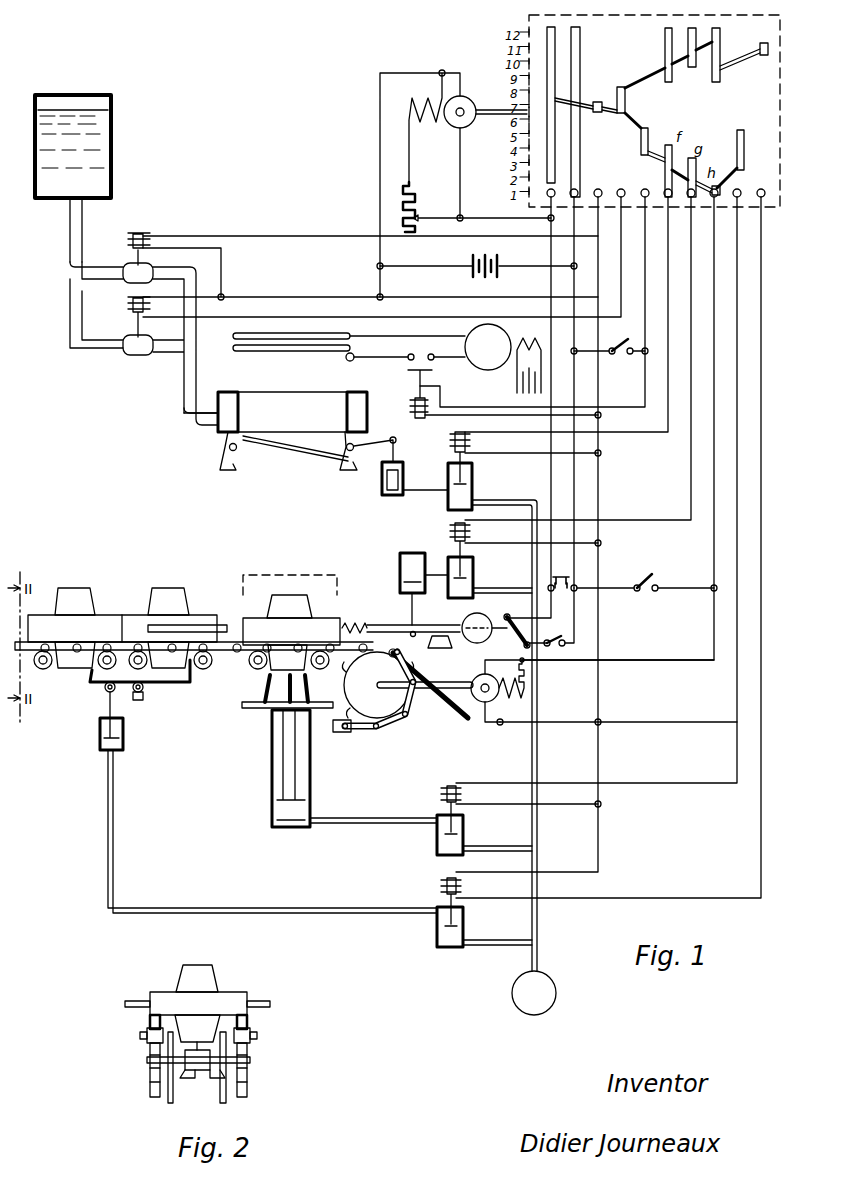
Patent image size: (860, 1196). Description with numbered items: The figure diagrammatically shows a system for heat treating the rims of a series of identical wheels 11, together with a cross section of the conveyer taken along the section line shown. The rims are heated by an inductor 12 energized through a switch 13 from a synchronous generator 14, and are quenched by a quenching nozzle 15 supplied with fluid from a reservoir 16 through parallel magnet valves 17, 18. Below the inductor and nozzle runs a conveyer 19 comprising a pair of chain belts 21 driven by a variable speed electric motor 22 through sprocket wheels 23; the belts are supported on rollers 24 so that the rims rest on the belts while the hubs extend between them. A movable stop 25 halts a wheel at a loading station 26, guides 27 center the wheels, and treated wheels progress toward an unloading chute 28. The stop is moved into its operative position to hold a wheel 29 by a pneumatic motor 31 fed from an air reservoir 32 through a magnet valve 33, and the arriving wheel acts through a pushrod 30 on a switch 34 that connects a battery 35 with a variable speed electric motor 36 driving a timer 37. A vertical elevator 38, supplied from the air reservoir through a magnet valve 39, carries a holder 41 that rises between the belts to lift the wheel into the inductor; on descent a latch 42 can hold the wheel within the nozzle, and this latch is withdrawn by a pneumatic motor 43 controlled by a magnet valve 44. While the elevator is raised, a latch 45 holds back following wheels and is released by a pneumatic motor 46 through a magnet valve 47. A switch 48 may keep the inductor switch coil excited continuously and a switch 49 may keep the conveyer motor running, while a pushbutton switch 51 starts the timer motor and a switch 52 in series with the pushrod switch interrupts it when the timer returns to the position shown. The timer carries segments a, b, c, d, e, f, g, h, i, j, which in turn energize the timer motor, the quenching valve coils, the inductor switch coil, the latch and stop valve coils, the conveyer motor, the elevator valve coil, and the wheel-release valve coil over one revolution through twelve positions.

In FIG. 1, the wheels 11 is at (84, 606).
In FIG. 2, the wheels 11 is at (200, 970).
In FIG. 1, the inductor 12 is at (233, 336).
In FIG. 1, the switch 13 is at (412, 372).
In FIG. 1, the synchronous generator 14 is at (488, 370).
In FIG. 1, the quenching nozzle 15 is at (236, 386).
In FIG. 1, the reservoir 16 is at (108, 178).
In FIG. 1, the magnet valve 17 is at (150, 272).
In FIG. 1, the magnet valve 18 is at (150, 340).
In FIG. 1, the conveyer 19 is at (415, 712).
In FIG. 1, the chain belts 21 is at (238, 652).
In FIG. 2, the chain belts 21 is at (150, 1022).
In FIG. 1, the variable speed electric motor 22 is at (478, 678).
In FIG. 1, the sprocket wheels 23 is at (395, 722).
In FIG. 2, the sprocket wheels 23 is at (150, 1072).
In FIG. 1, the rollers 24 is at (204, 670).
In FIG. 2, the rollers 24 is at (141, 1040).
In FIG. 1, the movable stop 25 is at (370, 625).
In FIG. 1, the loading station 26 is at (270, 575).
In FIG. 1, the guides 27 is at (200, 625).
In FIG. 2, the guides 27 is at (133, 1001).
In FIG. 1, the unloading chute 28 is at (422, 668).
In FIG. 2, the unloading chute 28 is at (170, 1032).
In FIG. 1, the wheel 29 is at (270, 604).
In FIG. 1, the pushrod 30 is at (465, 622).
In FIG. 1, the pneumatic motor 31 is at (400, 556).
In FIG. 1, the reservoir 32 is at (520, 978).
In FIG. 1, the magnet valve 33 is at (473, 574).
In FIG. 1, the switch 34 is at (525, 637).
In FIG. 1, the battery 35 is at (499, 264).
In FIG. 1, the variable speed electric motor 36 is at (455, 126).
In FIG. 1, the timer 37 is at (766, 207).
In FIG. 1, the vertical elevator 38 is at (310, 784).
In FIG. 1, the magnet valve 39 is at (437, 832).
In FIG. 1, the holder 41 is at (265, 692).
In FIG. 1, the latch 42 is at (350, 470).
In FIG. 1, the pneumatic motor 43 is at (413, 487).
In FIG. 1, the magnet valve 44 is at (472, 483).
In FIG. 1, the latch 45 is at (170, 682).
In FIG. 2, the latch 45 is at (197, 1076).
In FIG. 1, the pneumatic motor 46 is at (100, 735).
In FIG. 1, the magnet valve 47 is at (437, 924).
In FIG. 1, the switch 48 is at (609, 339).
In FIG. 1, the switch 49 is at (640, 576).
In FIG. 1, the pushbutton switch 51 is at (561, 577).
In FIG. 1, the switch 52 is at (559, 617).
In FIG. 1, the timer segment a is at (555, 35).
In FIG. 1, the timer segment b is at (580, 48).
In FIG. 1, the timer segment c is at (586, 98).
In FIG. 1, the timer segment d is at (641, 98).
In FIG. 1, the timer segment e is at (653, 136).
In FIG. 1, the timer segment f is at (665, 78).
In FIG. 1, the timer segment g is at (692, 67).
In FIG. 1, the timer segment h is at (736, 59).
In FIG. 1, the timer segment i is at (747, 145).
In FIG. 1, the timer segment j is at (764, 55).